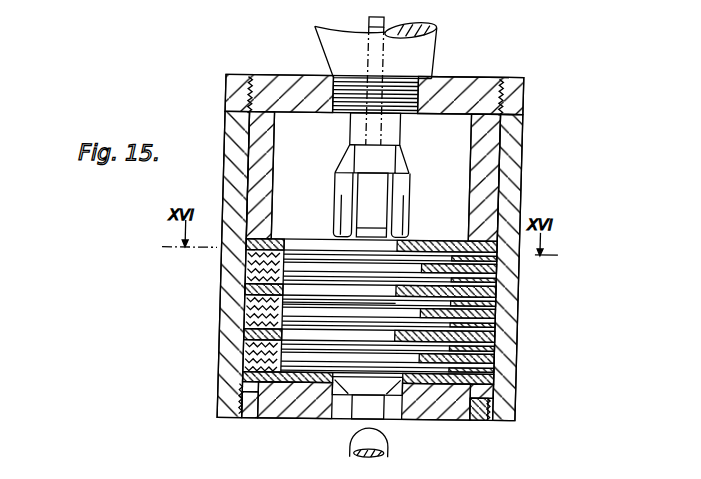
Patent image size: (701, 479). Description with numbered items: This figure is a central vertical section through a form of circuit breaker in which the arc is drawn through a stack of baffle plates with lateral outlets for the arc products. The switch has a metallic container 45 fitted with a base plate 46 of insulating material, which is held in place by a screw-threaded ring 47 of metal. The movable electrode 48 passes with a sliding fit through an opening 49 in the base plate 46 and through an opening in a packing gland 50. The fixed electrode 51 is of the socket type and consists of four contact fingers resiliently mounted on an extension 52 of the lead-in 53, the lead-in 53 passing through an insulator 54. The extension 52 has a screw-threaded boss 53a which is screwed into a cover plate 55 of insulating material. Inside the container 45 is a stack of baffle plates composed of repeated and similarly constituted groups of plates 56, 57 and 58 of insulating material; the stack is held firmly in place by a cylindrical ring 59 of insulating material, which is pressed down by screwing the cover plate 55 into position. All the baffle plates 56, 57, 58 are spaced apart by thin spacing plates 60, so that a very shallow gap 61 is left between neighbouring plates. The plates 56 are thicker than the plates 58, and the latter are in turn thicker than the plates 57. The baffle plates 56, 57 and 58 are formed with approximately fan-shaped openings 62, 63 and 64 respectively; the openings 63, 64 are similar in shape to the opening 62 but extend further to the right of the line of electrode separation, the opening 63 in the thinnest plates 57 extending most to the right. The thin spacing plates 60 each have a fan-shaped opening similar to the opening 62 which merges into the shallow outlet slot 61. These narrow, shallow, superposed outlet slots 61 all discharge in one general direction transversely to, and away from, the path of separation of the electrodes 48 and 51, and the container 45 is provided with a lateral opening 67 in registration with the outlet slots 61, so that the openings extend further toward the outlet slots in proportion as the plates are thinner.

The metallic container 45 is at (511, 160).
The base plate 46 is at (435, 413).
The screw-threaded ring 47 is at (489, 421).
The movable electrode 48 is at (364, 446).
The opening 49 is at (378, 399).
The packing gland 50 is at (303, 419).
The fixed electrode 51 is at (401, 211).
The extension 52 is at (382, 132).
The lead-in 53 is at (380, 33).
The screw-threaded boss 53a is at (351, 90).
The insulator 54 is at (413, 55).
The cover plate 55 is at (433, 93).
The baffle plate 56 is at (498, 338).
The baffle plate 57 is at (498, 350).
The baffle plate 58 is at (498, 365).
The cylindrical ring 59 is at (257, 128).
The spacing plate 60 is at (262, 255).
The outlet slot 61 is at (498, 301).
The fan-shaped opening 62 is at (296, 242).
The fan-shaped opening 63 is at (297, 303).
The fan-shaped opening 64 is at (284, 315).
The lateral opening 67 is at (511, 378).